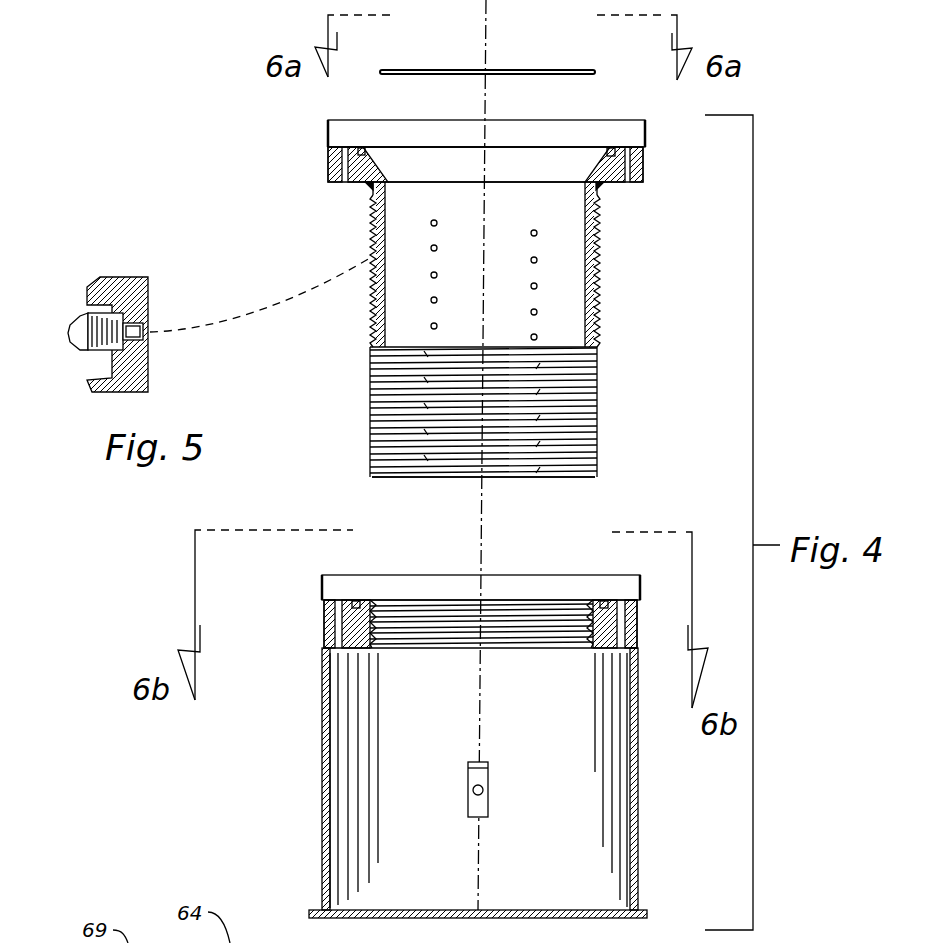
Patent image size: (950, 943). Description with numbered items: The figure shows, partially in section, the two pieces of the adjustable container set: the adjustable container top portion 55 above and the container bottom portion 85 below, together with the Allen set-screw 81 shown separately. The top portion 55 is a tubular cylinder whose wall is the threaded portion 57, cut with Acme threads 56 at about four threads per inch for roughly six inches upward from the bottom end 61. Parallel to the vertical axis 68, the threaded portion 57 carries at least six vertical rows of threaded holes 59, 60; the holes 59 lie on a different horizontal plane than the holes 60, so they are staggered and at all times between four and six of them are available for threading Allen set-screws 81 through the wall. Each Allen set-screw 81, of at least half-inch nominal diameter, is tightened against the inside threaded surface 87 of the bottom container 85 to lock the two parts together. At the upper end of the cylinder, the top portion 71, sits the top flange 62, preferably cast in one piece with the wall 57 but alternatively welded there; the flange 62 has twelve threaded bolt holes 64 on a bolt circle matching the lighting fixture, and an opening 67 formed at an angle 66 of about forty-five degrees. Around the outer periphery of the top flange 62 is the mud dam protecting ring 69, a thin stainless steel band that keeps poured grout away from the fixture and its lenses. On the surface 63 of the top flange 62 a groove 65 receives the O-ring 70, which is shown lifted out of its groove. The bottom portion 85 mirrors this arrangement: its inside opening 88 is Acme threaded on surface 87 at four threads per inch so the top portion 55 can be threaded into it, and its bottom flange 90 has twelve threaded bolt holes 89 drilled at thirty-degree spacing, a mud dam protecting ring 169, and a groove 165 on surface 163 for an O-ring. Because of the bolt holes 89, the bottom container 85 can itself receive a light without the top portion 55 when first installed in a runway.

In FIG. 4, the adjustable container top portion 55 is at (523, 47).
In FIG. 4, the O-ring 70 is at (577, 70).
In FIG. 4, the surface 63 is at (640, 122).
In FIG. 4, the mud dam protecting ring 69 is at (328, 142).
In FIG. 4, the top flange 62 is at (337, 165).
In FIG. 4, the threaded bolt holes 64 is at (335, 197).
In FIG. 4, the groove 65 is at (362, 147).
In FIG. 4, the opening 67 is at (465, 157).
In FIG. 4, the angle 66 is at (388, 167).
In FIG. 4, the top portion of the tubular cylindrical portion 71 is at (365, 188).
In FIG. 4, the threaded portion 57 is at (370, 322).
In FIG. 5, the threaded portion 57 is at (135, 280).
In FIG. 4, the threaded holes 60 is at (431, 222).
In FIG. 4, the threaded holes 59 is at (531, 232).
In FIG. 4, the Acme threads 56 is at (598, 392).
In FIG. 4, the vertical axis 68 is at (462, 490).
In FIG. 4, the bottom end 61 is at (602, 476).
In FIG. 4, the opening 88 is at (508, 590).
In FIG. 4, the bottom flange 90 is at (330, 573).
In FIG. 4, the mud dam protecting ring 169 is at (322, 582).
In FIG. 4, the threaded bolt holes 89 is at (343, 600).
In FIG. 4, the groove 165 is at (607, 607).
In FIG. 4, the surface 163 is at (604, 600).
In FIG. 4, the inside threaded surface 87 is at (582, 641).
In FIG. 4, the container bottom portion 85 is at (295, 642).
In FIG. 5, the Allen set-screw 81 is at (88, 313).